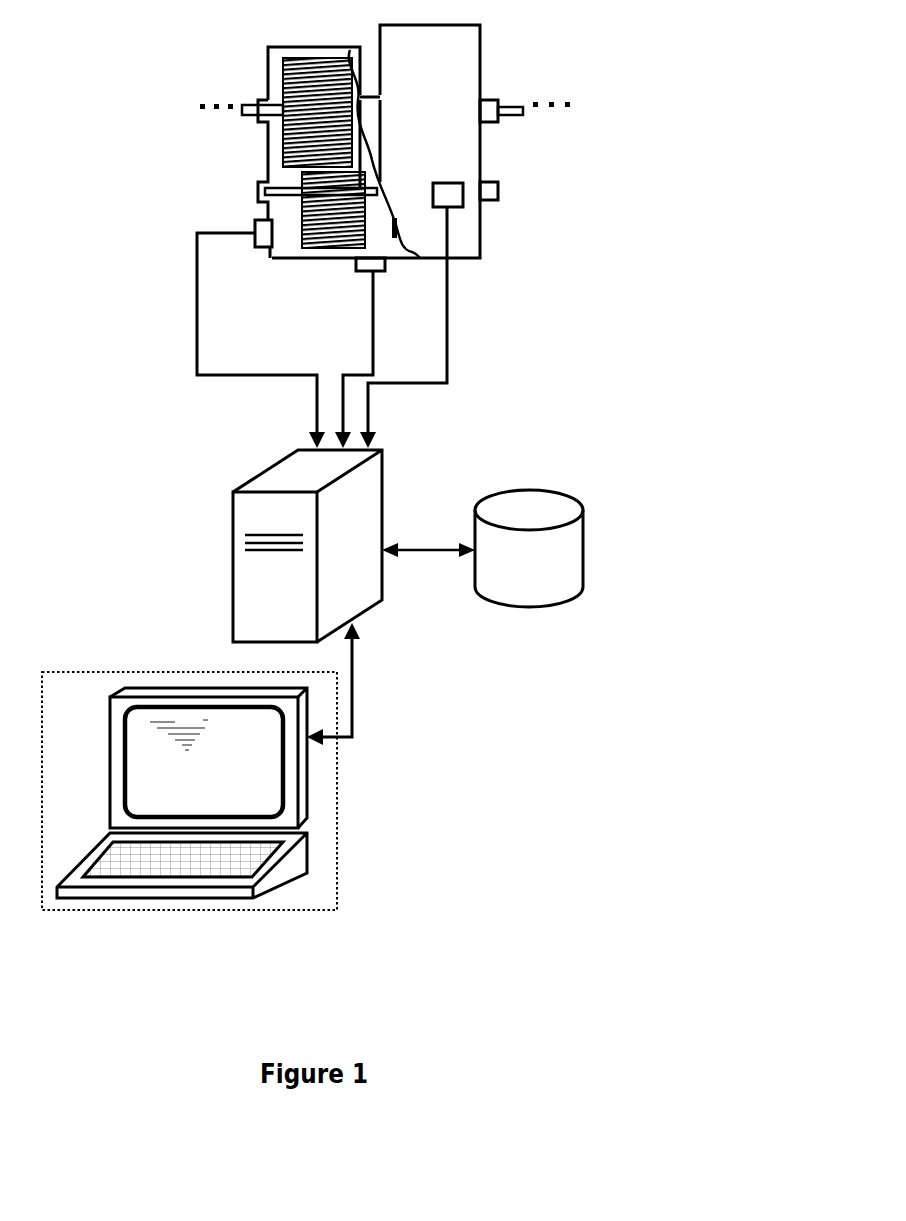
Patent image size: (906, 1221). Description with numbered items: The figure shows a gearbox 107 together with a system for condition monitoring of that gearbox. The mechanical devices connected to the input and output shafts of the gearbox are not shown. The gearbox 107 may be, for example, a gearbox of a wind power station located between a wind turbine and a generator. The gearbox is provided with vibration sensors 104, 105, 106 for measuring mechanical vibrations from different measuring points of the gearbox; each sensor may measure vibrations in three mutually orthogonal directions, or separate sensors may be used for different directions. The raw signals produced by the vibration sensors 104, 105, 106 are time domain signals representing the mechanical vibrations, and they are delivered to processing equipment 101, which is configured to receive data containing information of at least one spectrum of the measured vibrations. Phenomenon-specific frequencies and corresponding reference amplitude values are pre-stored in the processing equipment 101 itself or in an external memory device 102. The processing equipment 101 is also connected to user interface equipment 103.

The processing equipment 101 is at (233, 514).
The external memory device 102 is at (545, 575).
The user interface equipment 103 is at (337, 805).
The vibration sensor 104 is at (263, 250).
The vibration sensor 105 is at (355, 264).
The vibration sensor 106 is at (448, 183).
The gearbox 107 is at (443, 114).